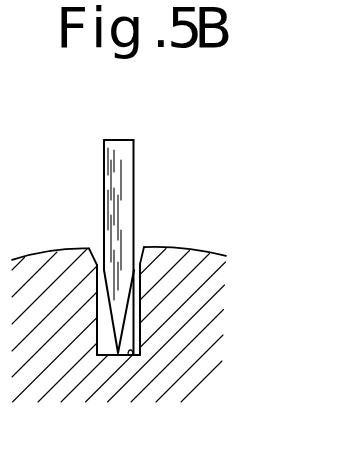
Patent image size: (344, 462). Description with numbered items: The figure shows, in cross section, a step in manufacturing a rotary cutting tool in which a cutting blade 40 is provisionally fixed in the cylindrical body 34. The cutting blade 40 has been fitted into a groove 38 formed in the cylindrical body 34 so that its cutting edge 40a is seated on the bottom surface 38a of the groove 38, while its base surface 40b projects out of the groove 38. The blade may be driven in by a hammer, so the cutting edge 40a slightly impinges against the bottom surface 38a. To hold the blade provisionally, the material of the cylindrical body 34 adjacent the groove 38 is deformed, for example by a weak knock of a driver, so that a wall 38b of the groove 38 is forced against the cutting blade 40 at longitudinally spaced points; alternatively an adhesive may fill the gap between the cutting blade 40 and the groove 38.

The cylindrical body 34 is at (207, 270).
The groove 38 is at (177, 314).
The bottom surface 38a is at (133, 358).
The wall 38b is at (145, 247).
The cutting blade 40 is at (135, 262).
The cutting edge 40a is at (113, 334).
The base surface 40b is at (125, 140).